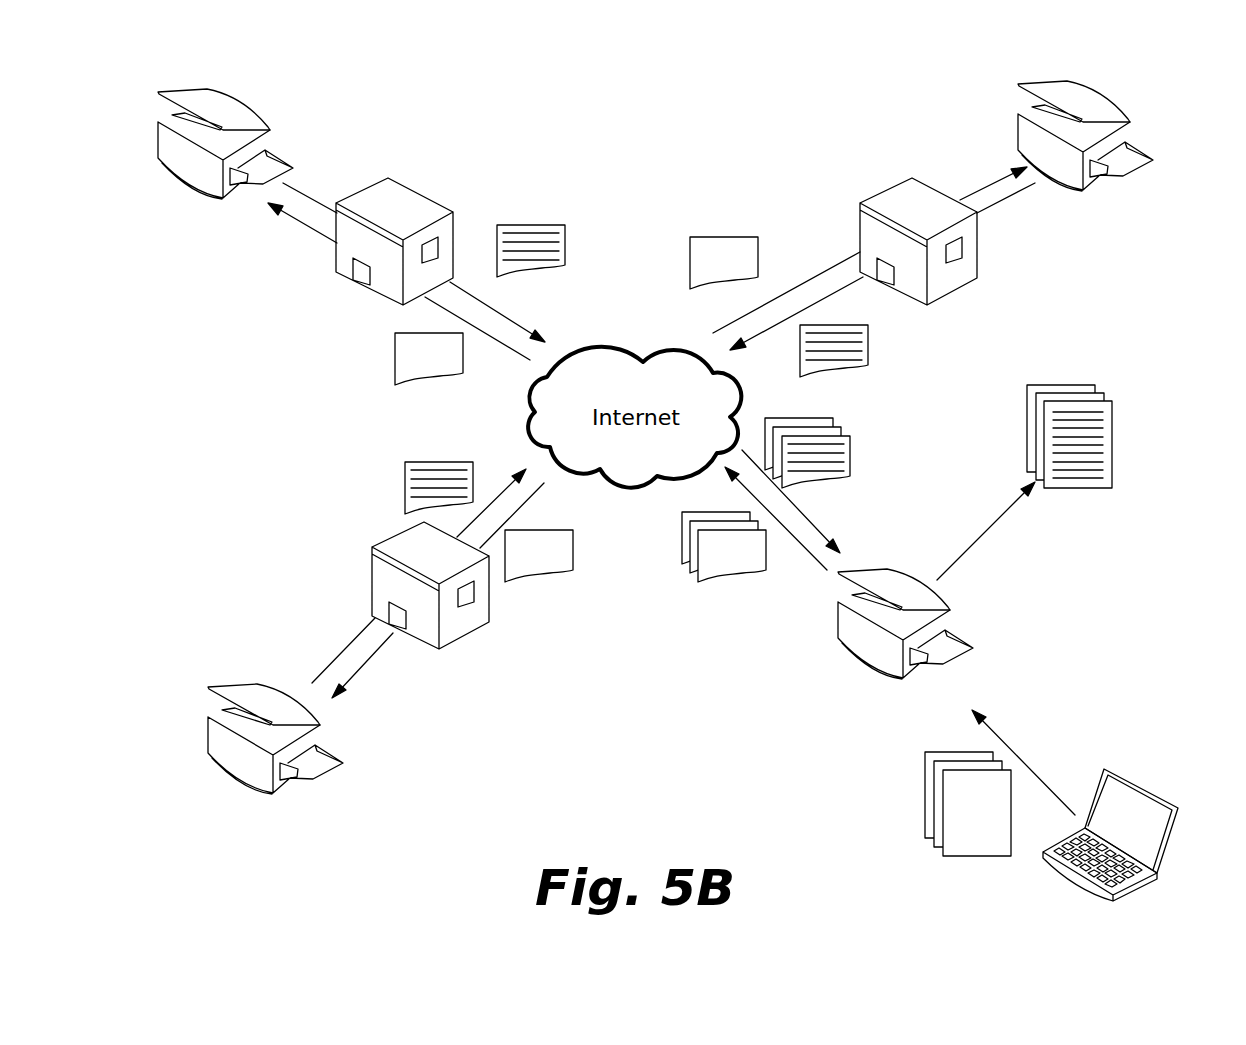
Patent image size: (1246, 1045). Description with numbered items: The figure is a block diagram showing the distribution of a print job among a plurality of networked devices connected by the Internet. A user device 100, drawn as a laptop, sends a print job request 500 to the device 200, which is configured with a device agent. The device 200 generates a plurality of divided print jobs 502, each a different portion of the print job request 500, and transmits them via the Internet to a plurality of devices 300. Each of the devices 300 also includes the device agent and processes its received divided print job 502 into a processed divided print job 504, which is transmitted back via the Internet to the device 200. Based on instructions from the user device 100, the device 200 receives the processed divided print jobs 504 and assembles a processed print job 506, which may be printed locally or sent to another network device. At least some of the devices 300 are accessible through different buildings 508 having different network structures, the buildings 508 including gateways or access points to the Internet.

The user device 100 is at (1110, 851).
The device 200 is at (905, 640).
The devices 300 is at (653, 438).
The print job request 500 is at (925, 800).
The divided print jobs 502 is at (395, 368).
The processed divided print jobs 504 is at (565, 238).
The processed print job 506 is at (1112, 428).
The buildings 508 is at (397, 193).